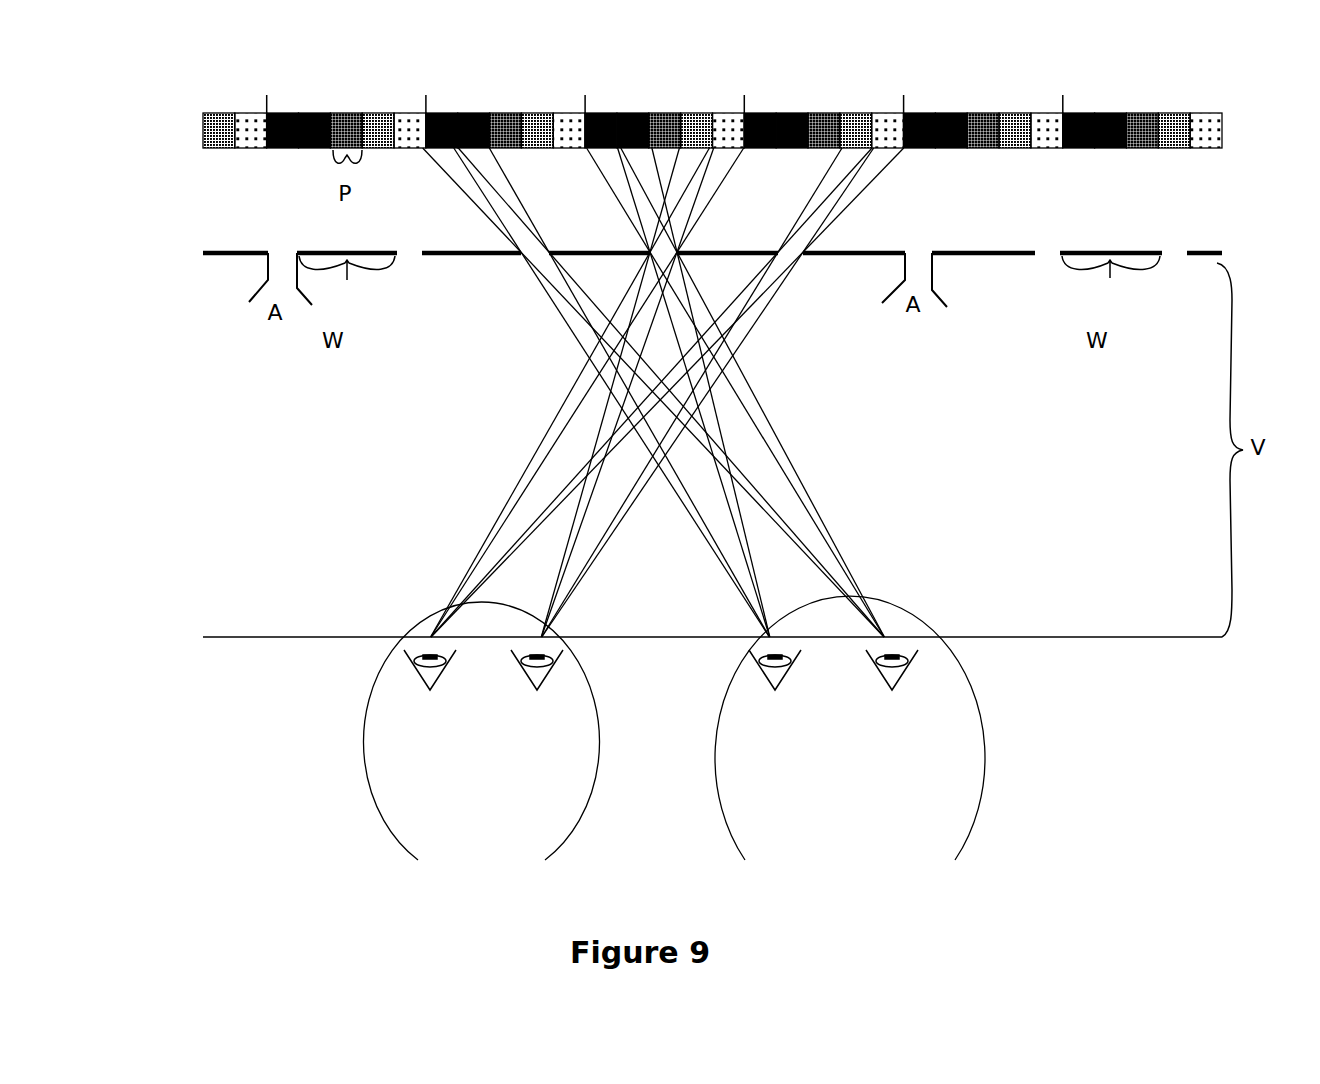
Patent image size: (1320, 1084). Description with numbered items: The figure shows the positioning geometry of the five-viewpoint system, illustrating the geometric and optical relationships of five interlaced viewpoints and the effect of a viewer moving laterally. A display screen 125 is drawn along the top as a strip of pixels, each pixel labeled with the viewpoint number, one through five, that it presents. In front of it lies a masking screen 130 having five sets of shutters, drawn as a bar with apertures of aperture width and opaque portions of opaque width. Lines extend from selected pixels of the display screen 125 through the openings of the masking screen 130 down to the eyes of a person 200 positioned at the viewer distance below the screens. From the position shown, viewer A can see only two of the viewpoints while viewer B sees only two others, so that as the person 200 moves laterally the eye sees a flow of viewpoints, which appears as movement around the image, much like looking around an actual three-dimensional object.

The display screen 125 is at (1086, 152).
The masking screen 130 is at (1128, 250).
The person 200 is at (713, 747).